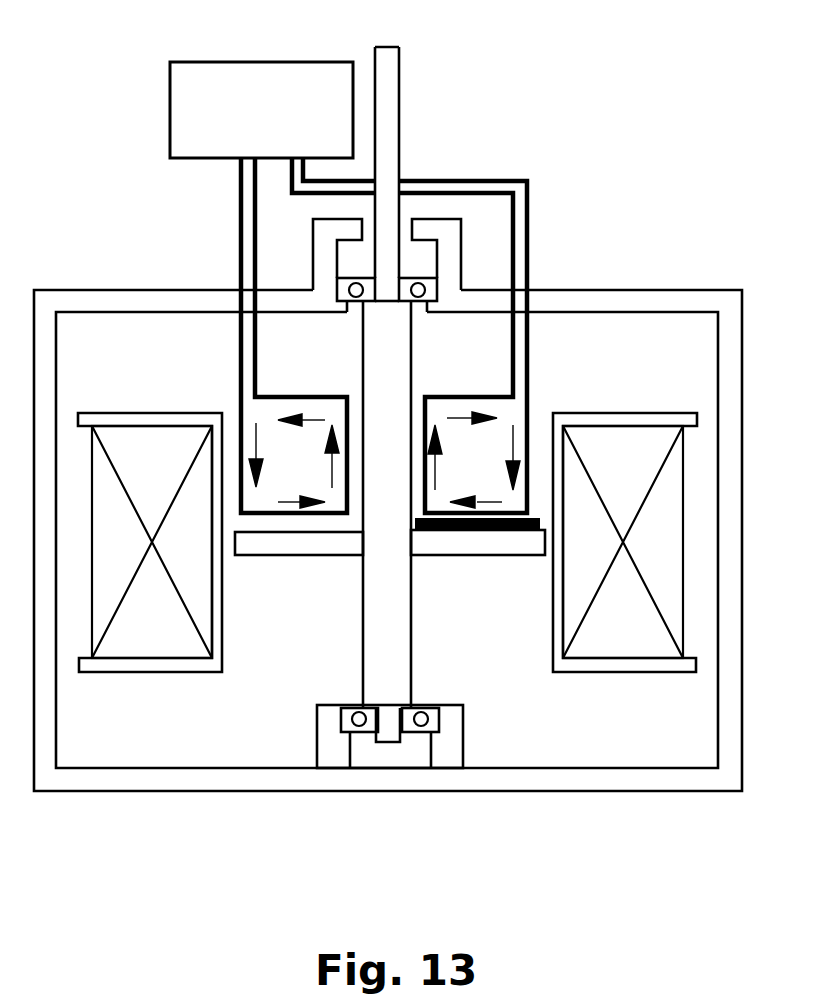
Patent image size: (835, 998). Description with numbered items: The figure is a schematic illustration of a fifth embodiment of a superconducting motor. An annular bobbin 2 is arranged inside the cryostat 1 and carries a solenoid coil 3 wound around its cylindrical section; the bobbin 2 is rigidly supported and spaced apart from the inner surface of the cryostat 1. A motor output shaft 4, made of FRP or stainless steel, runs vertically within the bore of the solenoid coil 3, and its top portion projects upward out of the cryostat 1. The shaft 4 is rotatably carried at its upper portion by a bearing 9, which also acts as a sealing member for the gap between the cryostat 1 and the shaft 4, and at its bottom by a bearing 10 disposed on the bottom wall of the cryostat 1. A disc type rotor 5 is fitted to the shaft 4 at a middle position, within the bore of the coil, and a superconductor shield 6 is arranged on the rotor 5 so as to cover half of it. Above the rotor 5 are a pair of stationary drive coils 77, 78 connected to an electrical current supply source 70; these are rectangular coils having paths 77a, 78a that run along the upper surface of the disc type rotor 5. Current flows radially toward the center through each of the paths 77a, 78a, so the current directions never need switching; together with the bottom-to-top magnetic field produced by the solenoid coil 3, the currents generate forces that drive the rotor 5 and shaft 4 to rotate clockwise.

The cryostat 1 is at (122, 300).
The annular bobbin 2 is at (133, 418).
The solenoid coil 3 is at (143, 635).
The motor output shaft 4 is at (400, 640).
The disc type rotor 5 is at (307, 547).
The superconductor shield 6 is at (478, 543).
The bearing 9 is at (437, 257).
The bearing 10 is at (423, 727).
The electrical current supply source 70 is at (298, 68).
The stationary drive coil 77 is at (528, 262).
The stationary drive coil 78 is at (238, 240).
The path 77a is at (258, 511).
The path 78a is at (440, 511).